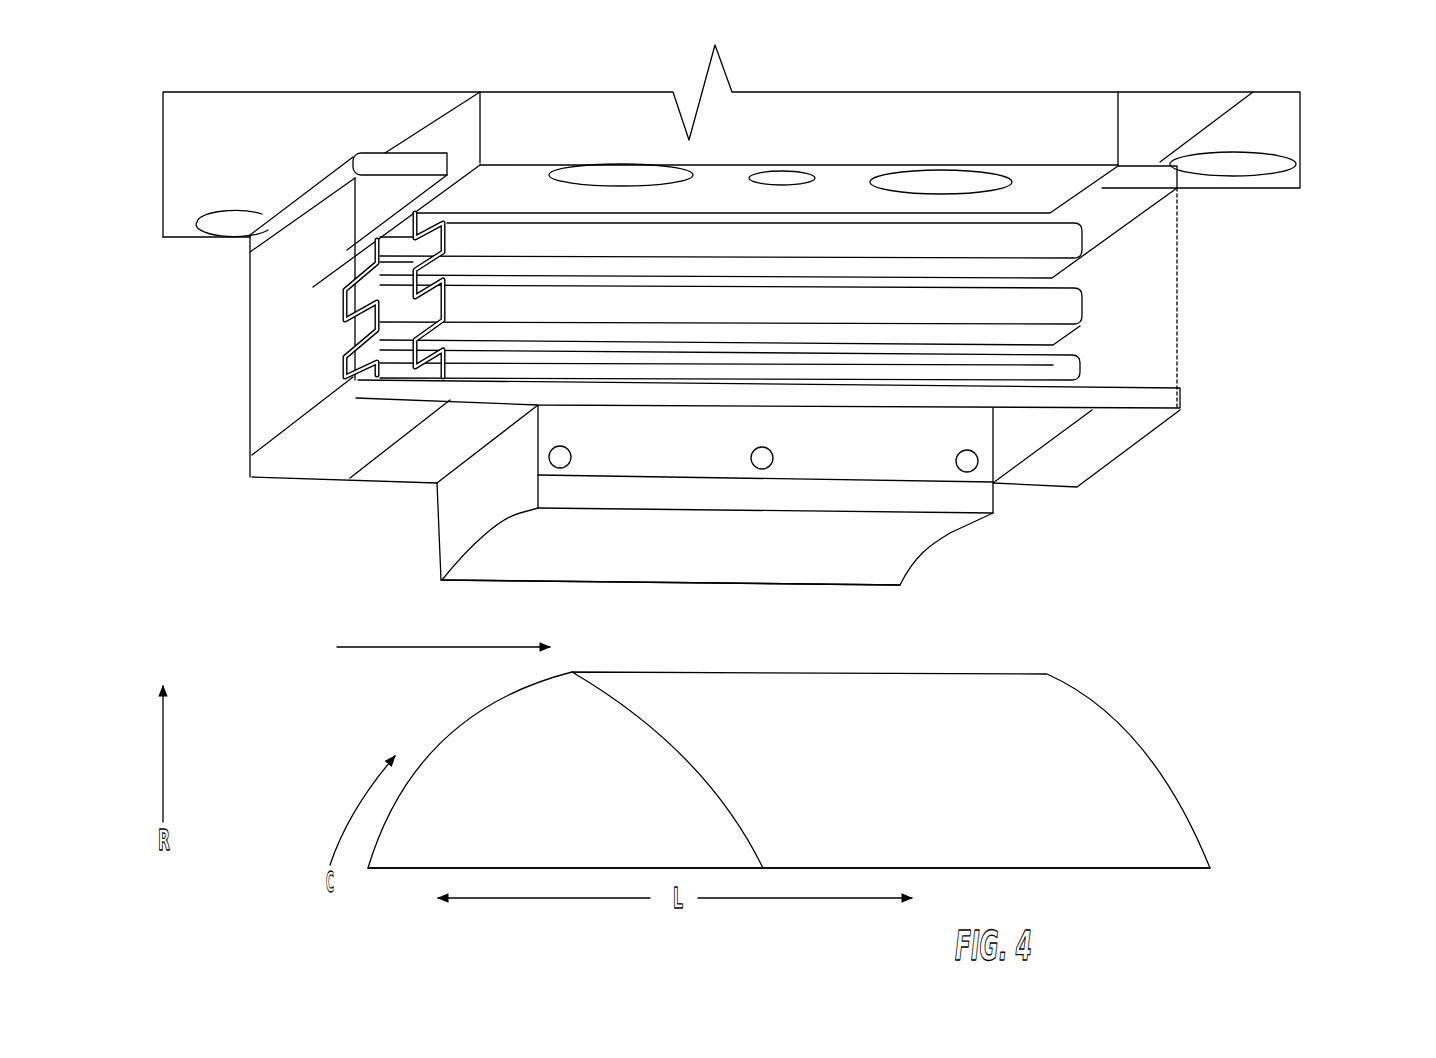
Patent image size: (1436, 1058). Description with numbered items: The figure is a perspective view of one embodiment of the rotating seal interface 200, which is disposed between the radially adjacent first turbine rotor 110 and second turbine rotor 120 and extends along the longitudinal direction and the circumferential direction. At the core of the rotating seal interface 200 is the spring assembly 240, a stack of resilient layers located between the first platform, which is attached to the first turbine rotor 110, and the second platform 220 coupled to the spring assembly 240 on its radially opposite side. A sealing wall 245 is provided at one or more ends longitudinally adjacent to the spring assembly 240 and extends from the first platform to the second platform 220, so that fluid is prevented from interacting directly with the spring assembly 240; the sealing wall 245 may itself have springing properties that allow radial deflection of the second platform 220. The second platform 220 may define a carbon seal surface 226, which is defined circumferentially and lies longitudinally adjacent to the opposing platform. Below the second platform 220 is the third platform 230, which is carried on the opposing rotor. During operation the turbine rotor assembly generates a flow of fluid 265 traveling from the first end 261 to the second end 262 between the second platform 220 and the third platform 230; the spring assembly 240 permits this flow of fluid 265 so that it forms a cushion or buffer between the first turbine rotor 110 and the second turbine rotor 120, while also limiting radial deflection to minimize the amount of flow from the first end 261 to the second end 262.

The first turbine rotor 110 is at (1337, 137).
The second turbine rotor 120 is at (1212, 783).
The rotating seal interface 200 is at (1362, 315).
The second platform 220 is at (978, 500).
The carbon seal surface 226 is at (485, 591).
The third platform 230 is at (1027, 692).
The spring assembly 240 is at (1045, 312).
The sealing wall 245 is at (1160, 277).
The first end 261 is at (137, 597).
The second end 262 is at (1303, 590).
The flow of fluid 265 is at (393, 647).